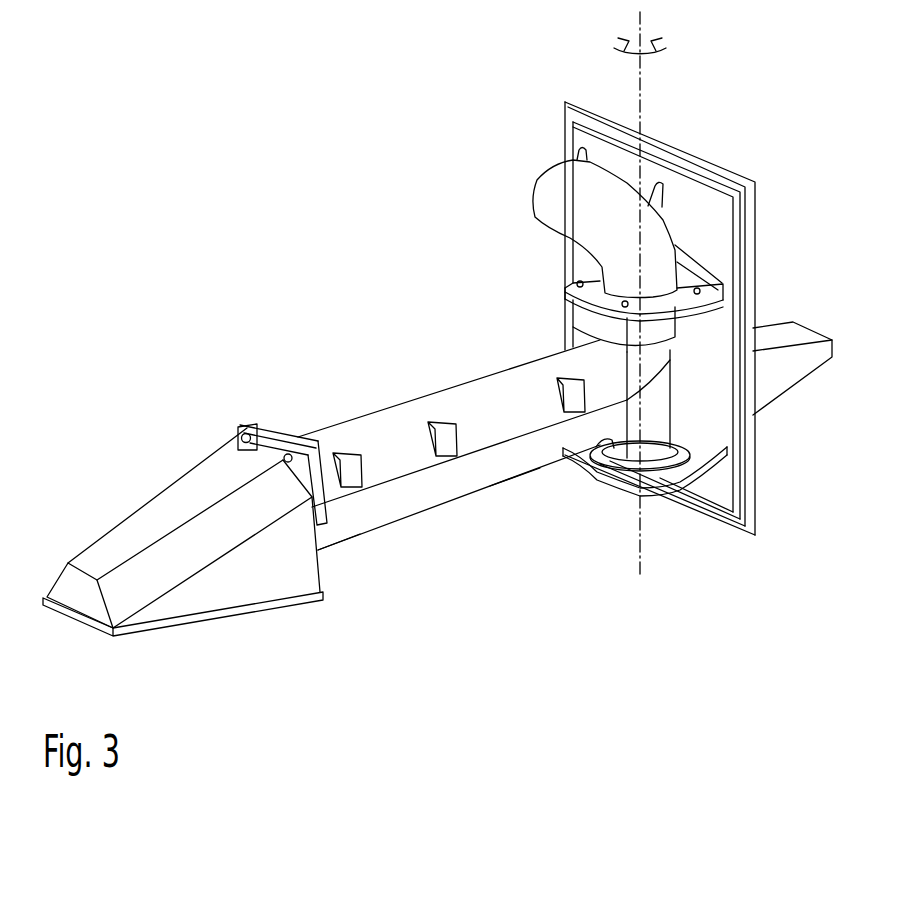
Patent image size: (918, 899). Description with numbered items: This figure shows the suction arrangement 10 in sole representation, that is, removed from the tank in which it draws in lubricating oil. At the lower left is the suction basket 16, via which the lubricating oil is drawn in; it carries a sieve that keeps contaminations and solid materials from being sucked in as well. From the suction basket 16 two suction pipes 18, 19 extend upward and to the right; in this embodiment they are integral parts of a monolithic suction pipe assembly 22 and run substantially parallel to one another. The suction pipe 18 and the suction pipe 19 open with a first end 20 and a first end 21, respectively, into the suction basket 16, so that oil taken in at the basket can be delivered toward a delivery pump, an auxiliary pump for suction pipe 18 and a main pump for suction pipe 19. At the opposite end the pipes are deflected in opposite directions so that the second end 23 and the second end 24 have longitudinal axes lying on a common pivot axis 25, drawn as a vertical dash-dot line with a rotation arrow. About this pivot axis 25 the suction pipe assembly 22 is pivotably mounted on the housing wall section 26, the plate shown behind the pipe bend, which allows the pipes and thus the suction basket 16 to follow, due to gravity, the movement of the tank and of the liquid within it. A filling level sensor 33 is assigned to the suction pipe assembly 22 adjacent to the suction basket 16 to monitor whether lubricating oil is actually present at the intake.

The suction arrangement 10 is at (433, 348).
The suction basket 16 is at (173, 550).
The suction pipe 18 is at (438, 492).
The suction pipe 19 is at (385, 421).
The first end 20 is at (280, 423).
The first end 21 is at (334, 562).
The suction pipe assembly 22 is at (515, 486).
The second end 23 is at (657, 358).
The second end 24 is at (660, 447).
The pivot axis 25 is at (642, 573).
The housing wall section 26 is at (693, 197).
The filling level sensor 33 is at (352, 477).